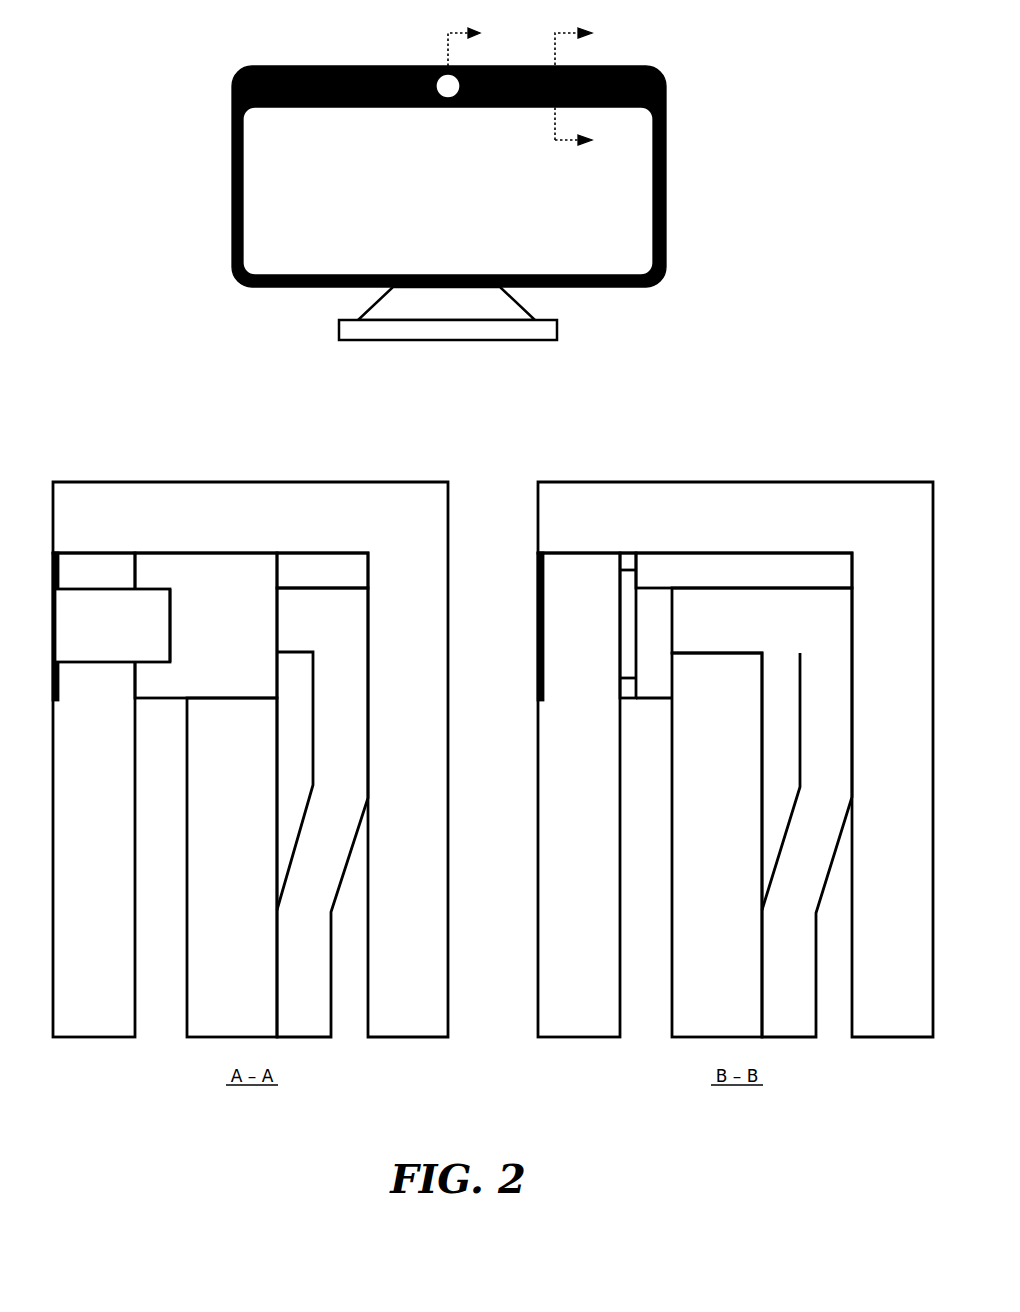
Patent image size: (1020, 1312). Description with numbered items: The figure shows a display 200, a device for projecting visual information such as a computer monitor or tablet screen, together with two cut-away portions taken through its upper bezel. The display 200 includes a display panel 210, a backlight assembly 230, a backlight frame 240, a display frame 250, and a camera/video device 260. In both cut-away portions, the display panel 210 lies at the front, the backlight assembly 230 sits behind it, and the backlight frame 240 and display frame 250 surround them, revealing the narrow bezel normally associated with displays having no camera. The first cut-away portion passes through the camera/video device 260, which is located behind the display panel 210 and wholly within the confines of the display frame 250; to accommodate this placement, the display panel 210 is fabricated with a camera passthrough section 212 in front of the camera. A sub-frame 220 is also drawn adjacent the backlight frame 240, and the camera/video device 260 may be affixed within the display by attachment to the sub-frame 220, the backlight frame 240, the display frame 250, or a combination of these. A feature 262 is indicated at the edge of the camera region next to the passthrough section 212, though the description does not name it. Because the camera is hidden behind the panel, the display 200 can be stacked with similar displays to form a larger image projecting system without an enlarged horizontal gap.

The display 200 is at (282, 66).
The display panel 210 is at (596, 926).
The camera passthrough section 212 is at (112, 625).
The sub-frame 220 is at (308, 583).
The backlight assembly 230 is at (734, 916).
The backlight frame 240 is at (779, 642).
The display frame 250 is at (910, 926).
The camera/video device 260 is at (414, 50).
The camera lens 262 is at (173, 602).